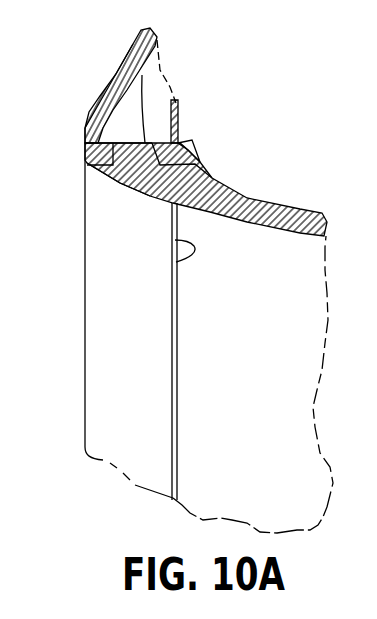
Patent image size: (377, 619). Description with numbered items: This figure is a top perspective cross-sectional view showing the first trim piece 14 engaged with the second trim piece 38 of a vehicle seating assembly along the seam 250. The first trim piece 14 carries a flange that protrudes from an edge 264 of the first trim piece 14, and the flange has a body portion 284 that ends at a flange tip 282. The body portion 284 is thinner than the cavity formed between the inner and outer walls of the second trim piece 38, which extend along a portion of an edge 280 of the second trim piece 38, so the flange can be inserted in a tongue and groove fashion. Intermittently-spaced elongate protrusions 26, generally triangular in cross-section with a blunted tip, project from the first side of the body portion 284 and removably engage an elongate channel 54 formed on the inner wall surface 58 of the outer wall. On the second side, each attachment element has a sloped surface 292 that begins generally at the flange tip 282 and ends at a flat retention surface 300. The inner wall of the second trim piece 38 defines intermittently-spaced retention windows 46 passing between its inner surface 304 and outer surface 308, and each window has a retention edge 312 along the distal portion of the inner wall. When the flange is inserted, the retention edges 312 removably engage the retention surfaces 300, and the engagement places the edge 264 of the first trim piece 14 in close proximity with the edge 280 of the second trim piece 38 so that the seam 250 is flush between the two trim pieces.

The first trim piece 14 is at (252, 438).
The intermittently-spaced elongate protrusions 26 is at (108, 162).
The second trim piece 38 is at (132, 388).
The intermittently-spaced retention windows 46 is at (180, 113).
The elongate channel 54 is at (133, 181).
The inner wall surface 58 is at (190, 153).
The seam 250 is at (175, 416).
The edge 264 is at (175, 322).
The edge 280 is at (176, 262).
The flange tip 282 is at (98, 148).
The body portion 284 is at (195, 176).
The sloped surface 292 is at (128, 68).
The retention surface 300 is at (158, 132).
The inner surface 304 is at (96, 152).
The outer surface 308 is at (115, 97).
The retention edge 312 is at (181, 142).